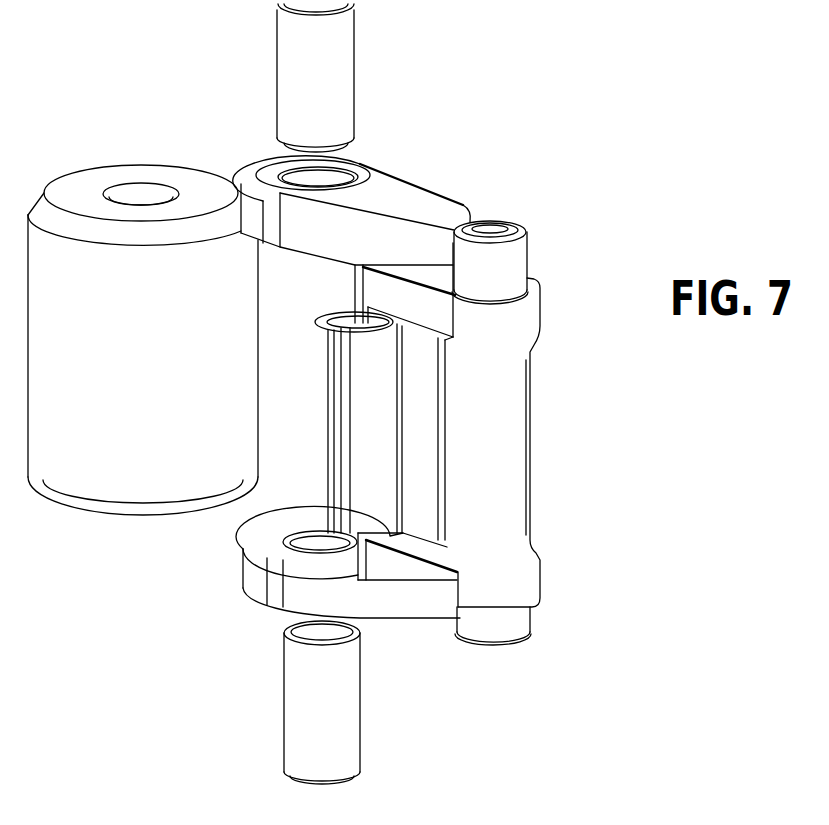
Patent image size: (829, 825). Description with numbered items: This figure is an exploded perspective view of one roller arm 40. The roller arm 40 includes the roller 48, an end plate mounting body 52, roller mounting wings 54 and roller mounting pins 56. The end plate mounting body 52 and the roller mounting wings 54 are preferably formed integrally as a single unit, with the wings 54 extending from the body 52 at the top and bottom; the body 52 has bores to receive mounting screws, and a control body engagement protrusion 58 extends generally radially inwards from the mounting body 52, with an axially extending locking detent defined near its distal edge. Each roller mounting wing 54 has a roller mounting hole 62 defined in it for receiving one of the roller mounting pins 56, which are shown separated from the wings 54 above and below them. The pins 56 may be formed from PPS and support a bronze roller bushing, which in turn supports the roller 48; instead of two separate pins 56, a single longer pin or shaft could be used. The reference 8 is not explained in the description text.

The roller arm 40 is at (533, 90).
The roller 48 is at (143, 357).
The end plate mounting body 52 is at (524, 425).
The roller mounting wings 54 is at (359, 400).
The roller mounting pins 56 is at (353, 394).
The control body engagement protrusion 58 is at (299, 422).
The roller mounting holes 62 is at (265, 333).
The shaft pin 8 is at (328, 323).